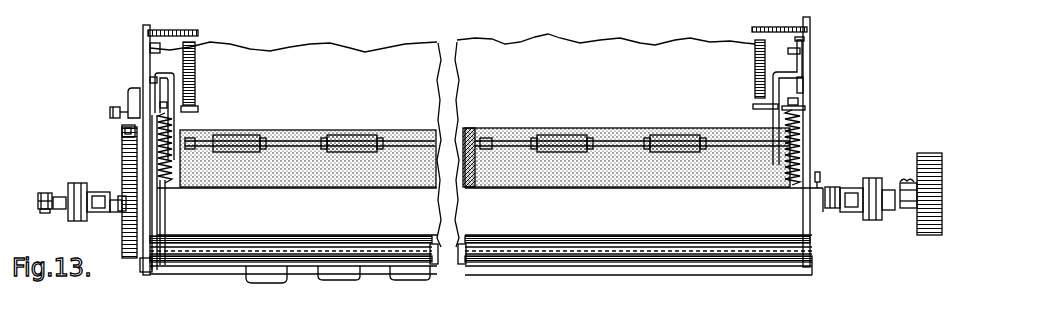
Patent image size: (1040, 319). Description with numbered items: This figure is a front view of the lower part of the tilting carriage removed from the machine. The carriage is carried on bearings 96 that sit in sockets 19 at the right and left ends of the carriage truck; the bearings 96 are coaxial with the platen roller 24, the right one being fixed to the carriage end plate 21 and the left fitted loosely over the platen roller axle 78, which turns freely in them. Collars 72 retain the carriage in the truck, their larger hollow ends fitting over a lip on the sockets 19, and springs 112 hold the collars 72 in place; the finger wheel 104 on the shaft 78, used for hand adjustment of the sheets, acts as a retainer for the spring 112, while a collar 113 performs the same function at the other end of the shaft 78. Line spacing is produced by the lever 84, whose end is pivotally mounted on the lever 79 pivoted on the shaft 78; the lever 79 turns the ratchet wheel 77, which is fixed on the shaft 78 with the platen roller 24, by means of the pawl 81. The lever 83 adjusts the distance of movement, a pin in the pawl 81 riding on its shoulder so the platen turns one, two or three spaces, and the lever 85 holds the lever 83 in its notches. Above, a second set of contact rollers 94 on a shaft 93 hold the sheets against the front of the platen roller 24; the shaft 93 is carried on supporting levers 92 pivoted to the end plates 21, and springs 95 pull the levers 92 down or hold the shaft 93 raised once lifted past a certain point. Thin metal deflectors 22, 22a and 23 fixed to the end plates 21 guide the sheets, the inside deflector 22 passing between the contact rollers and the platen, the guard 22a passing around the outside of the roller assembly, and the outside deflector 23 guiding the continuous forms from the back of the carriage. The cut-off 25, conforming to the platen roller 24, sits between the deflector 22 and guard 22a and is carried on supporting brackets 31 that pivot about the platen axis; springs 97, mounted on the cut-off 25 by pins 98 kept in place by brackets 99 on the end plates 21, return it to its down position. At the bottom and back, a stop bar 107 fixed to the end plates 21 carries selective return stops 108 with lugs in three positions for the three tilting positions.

The socket 19 is at (100, 213).
The carriage end plate 21 is at (146, 43).
The inside deflector 22 is at (500, 49).
The guard 22a is at (490, 237).
The outside deflector 23 is at (535, 247).
The platen roller 24 is at (497, 130).
The cut-off 25 is at (808, 227).
The supporting bracket 31 is at (157, 218).
The collar 72 is at (80, 221).
The ratchet wheel 77 is at (124, 166).
The platen roller axle 78 is at (38, 202).
The lever 79 is at (122, 131).
The pawl 81 is at (130, 134).
The lever 83 is at (128, 92).
The lever 84 is at (110, 110).
The lever 85 is at (139, 262).
The supporting lever 92 is at (176, 90).
The shaft 93 is at (405, 130).
The contact roller 94 is at (317, 133).
The spring 95 is at (197, 68).
The bearing 96 is at (832, 209).
The spring 97 is at (168, 135).
The pin 98 is at (167, 105).
The bracket 99 is at (150, 80).
The finger wheel 104 is at (925, 157).
The stop bar 107 is at (480, 272).
The selective return stop 108 is at (270, 276).
The spring 112 is at (55, 195).
The collar 113 is at (44, 212).